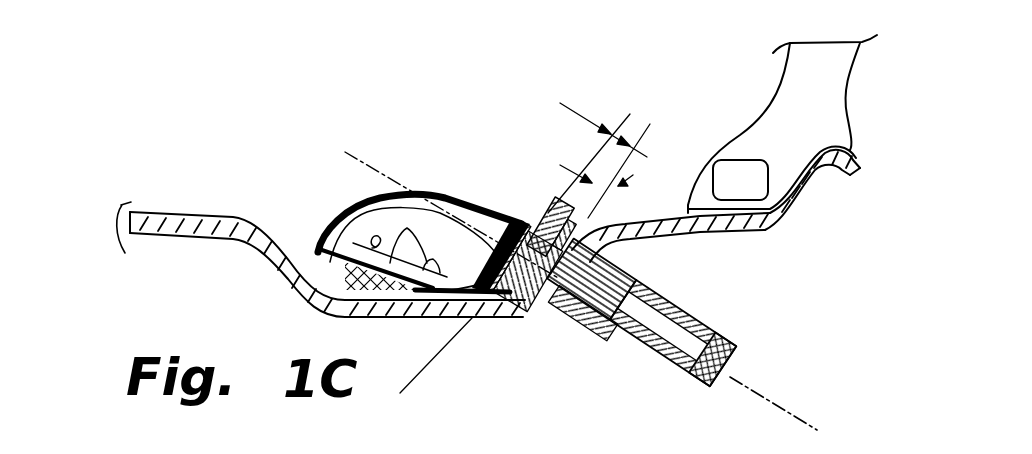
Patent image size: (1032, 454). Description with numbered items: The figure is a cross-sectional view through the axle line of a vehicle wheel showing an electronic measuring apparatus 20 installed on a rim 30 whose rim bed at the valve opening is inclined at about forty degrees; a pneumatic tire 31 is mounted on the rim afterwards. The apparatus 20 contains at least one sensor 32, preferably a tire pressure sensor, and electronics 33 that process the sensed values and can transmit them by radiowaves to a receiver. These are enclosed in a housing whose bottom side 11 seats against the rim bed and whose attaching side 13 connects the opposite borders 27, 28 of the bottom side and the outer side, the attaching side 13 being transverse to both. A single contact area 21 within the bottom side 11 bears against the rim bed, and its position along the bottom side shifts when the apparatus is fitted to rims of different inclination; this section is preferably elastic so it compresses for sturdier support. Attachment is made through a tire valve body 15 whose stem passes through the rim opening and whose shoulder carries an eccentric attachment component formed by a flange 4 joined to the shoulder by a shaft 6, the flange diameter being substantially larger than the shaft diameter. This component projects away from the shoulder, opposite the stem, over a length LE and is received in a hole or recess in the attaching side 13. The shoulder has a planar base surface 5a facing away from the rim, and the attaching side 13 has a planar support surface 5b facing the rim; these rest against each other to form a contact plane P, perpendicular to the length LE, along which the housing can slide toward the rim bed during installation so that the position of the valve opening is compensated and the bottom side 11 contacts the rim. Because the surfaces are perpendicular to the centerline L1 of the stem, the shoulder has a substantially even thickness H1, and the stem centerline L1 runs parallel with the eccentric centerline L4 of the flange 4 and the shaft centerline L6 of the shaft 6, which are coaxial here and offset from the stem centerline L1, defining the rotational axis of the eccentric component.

The flange 4 is at (536, 210).
The planar base surface 5a is at (550, 165).
The planar support surface 5b is at (526, 230).
The shaft 6 is at (536, 210).
The bottom side 11 is at (318, 270).
The attaching side 13 is at (640, 279).
The tire valve body 15 is at (545, 250).
The electronic measuring apparatus 20 is at (445, 138).
The contact area 21 is at (422, 308).
The border of the bottom side 27 is at (445, 317).
The border of the outer side 28 is at (526, 230).
The rim 30 is at (152, 233).
The pneumatic tire 31 is at (803, 142).
The sensor 32 is at (217, 186).
The electronics 33 is at (365, 240).
The contact plane P is at (444, 351).
The thickness of the shoulder H1 is at (650, 225).
The centerline of the stem L1 is at (779, 403).
The eccentric centerline L4 is at (430, 181).
The shaft centerline L6 is at (345, 152).
The length of the eccentric attachment component LE is at (609, 158).